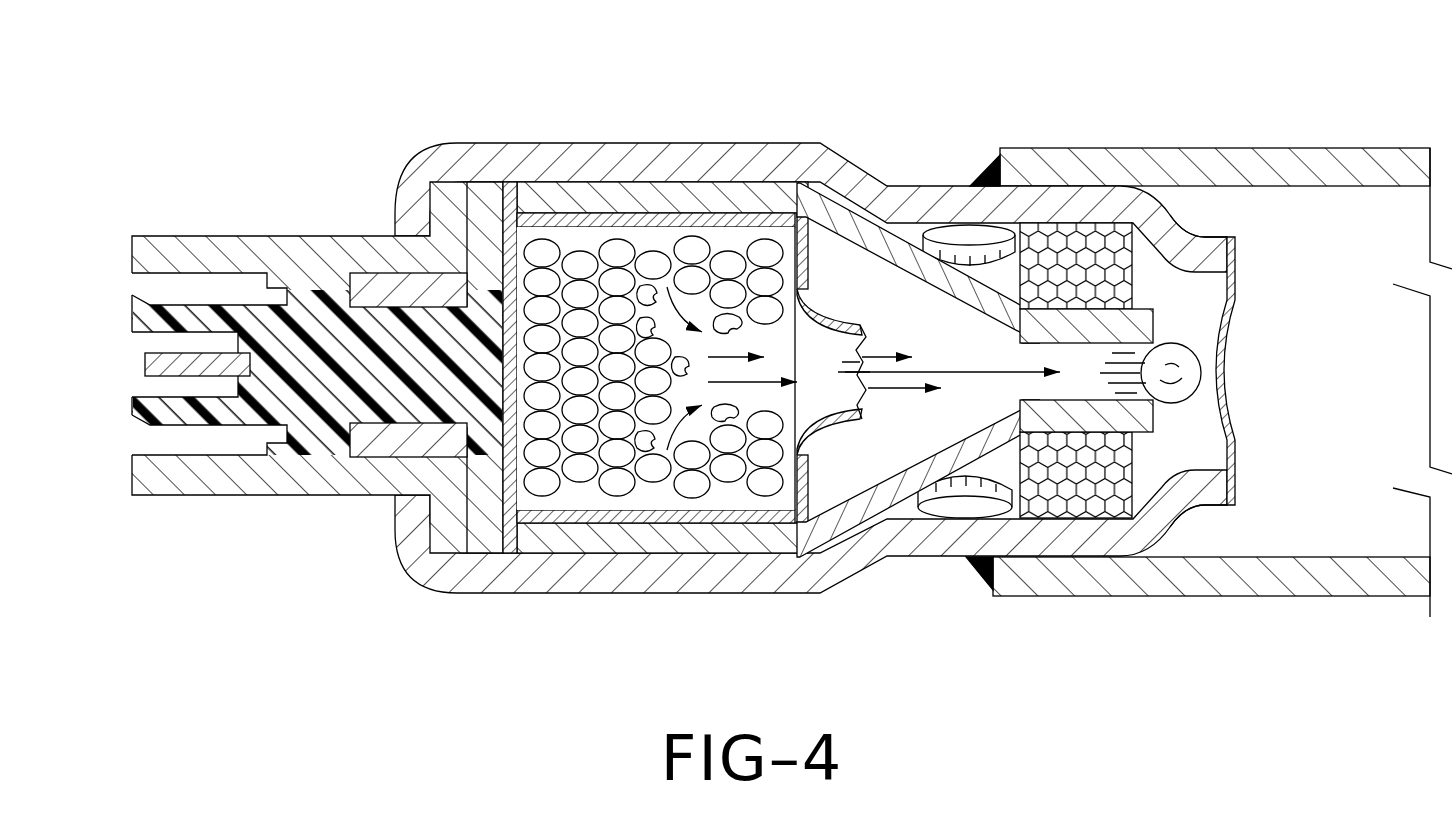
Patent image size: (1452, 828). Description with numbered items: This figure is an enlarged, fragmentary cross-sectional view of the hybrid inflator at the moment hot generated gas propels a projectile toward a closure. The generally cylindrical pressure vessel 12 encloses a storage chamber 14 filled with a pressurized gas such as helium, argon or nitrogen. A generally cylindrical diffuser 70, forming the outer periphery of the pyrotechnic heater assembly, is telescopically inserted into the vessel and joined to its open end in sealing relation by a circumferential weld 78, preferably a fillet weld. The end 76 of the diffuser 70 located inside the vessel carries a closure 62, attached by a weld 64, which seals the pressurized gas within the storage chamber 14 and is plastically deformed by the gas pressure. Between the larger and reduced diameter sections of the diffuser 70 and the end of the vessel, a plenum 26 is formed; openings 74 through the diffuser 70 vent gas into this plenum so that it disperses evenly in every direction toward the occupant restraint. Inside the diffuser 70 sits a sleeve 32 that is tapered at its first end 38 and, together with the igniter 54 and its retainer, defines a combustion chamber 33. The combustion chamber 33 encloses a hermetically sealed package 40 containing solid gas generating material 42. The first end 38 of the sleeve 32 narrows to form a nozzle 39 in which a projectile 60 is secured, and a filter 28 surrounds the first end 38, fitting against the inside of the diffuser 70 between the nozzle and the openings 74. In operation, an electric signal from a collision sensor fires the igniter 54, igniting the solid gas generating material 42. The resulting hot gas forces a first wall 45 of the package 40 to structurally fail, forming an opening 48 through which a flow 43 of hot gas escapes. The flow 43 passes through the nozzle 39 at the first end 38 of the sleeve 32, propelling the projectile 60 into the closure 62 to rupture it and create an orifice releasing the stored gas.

The pressure vessel 12 is at (1310, 165).
The storage chamber 14 is at (1342, 527).
The plenum 26 is at (910, 178).
The filter 28 is at (1070, 252).
The sleeve 32 is at (697, 207).
The combustion chamber 33 is at (638, 218).
The first end of the sleeve 38 is at (1113, 327).
The nozzle 39 is at (1113, 418).
The package 40 is at (577, 218).
The solid gas generating material 42 is at (578, 472).
The flow of hot generated gas 43 is at (995, 372).
The first wall of the package 45 is at (808, 300).
The opening 48 is at (848, 392).
The igniter 54 is at (300, 298).
The projectile 60 is at (1180, 372).
The closure 62 is at (1220, 400).
The weld 64 is at (1230, 237).
The diffuser 70 is at (710, 565).
The openings 74 is at (975, 238).
The end of the diffuser 76 is at (1208, 500).
The circumferential weld 78 is at (975, 582).